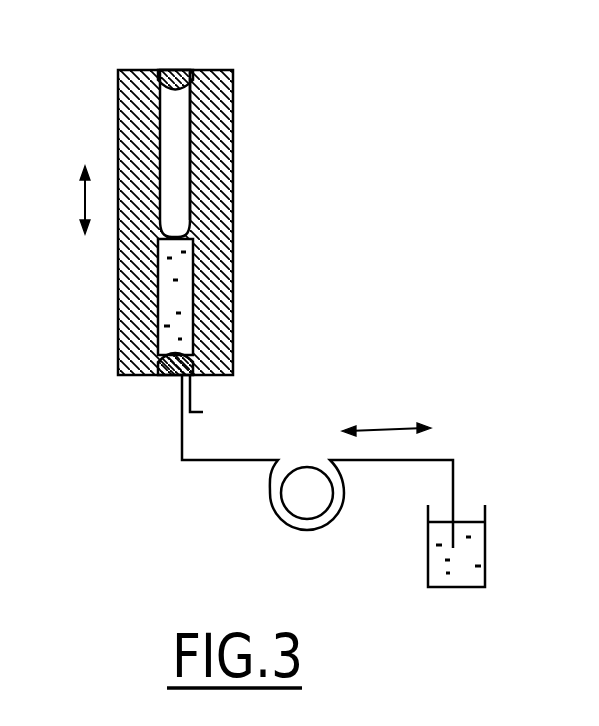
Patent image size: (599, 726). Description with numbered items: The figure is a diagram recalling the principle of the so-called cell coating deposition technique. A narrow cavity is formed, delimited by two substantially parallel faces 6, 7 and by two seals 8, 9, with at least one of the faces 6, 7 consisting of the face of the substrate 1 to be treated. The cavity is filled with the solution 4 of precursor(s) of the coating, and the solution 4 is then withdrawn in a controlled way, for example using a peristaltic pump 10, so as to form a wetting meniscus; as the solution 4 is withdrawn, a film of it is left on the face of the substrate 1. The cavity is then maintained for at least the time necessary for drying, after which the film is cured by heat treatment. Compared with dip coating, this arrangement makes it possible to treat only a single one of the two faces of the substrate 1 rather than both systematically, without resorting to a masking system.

The substrate 1 is at (232, 96).
The solution 4 is at (177, 300).
The face 6 is at (191, 150).
The face 7 is at (158, 140).
The seal 8 is at (174, 70).
The seal 9 is at (189, 389).
The peristaltic pump 10 is at (338, 512).